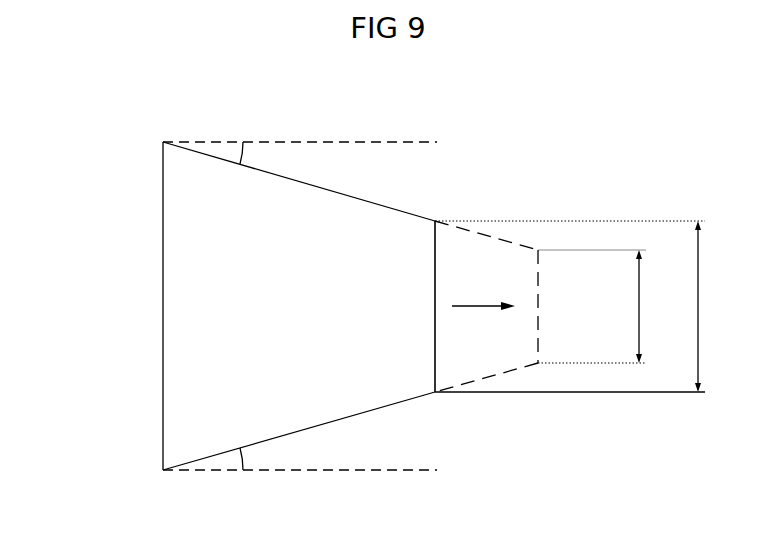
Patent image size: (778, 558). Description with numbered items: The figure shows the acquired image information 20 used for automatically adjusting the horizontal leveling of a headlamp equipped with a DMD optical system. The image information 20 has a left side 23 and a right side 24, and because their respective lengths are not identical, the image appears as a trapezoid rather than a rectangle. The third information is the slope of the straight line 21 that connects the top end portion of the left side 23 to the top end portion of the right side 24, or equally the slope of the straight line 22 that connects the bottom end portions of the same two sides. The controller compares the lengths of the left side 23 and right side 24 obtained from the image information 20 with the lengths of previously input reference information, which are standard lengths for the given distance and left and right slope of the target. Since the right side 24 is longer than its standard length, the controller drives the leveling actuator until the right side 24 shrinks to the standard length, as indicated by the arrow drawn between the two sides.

The image information 20 is at (132, 403).
The top side of the image information 21 is at (342, 192).
The bottom side of the image information 22 is at (335, 422).
The left side 23 is at (163, 261).
The right side 24 is at (435, 345).